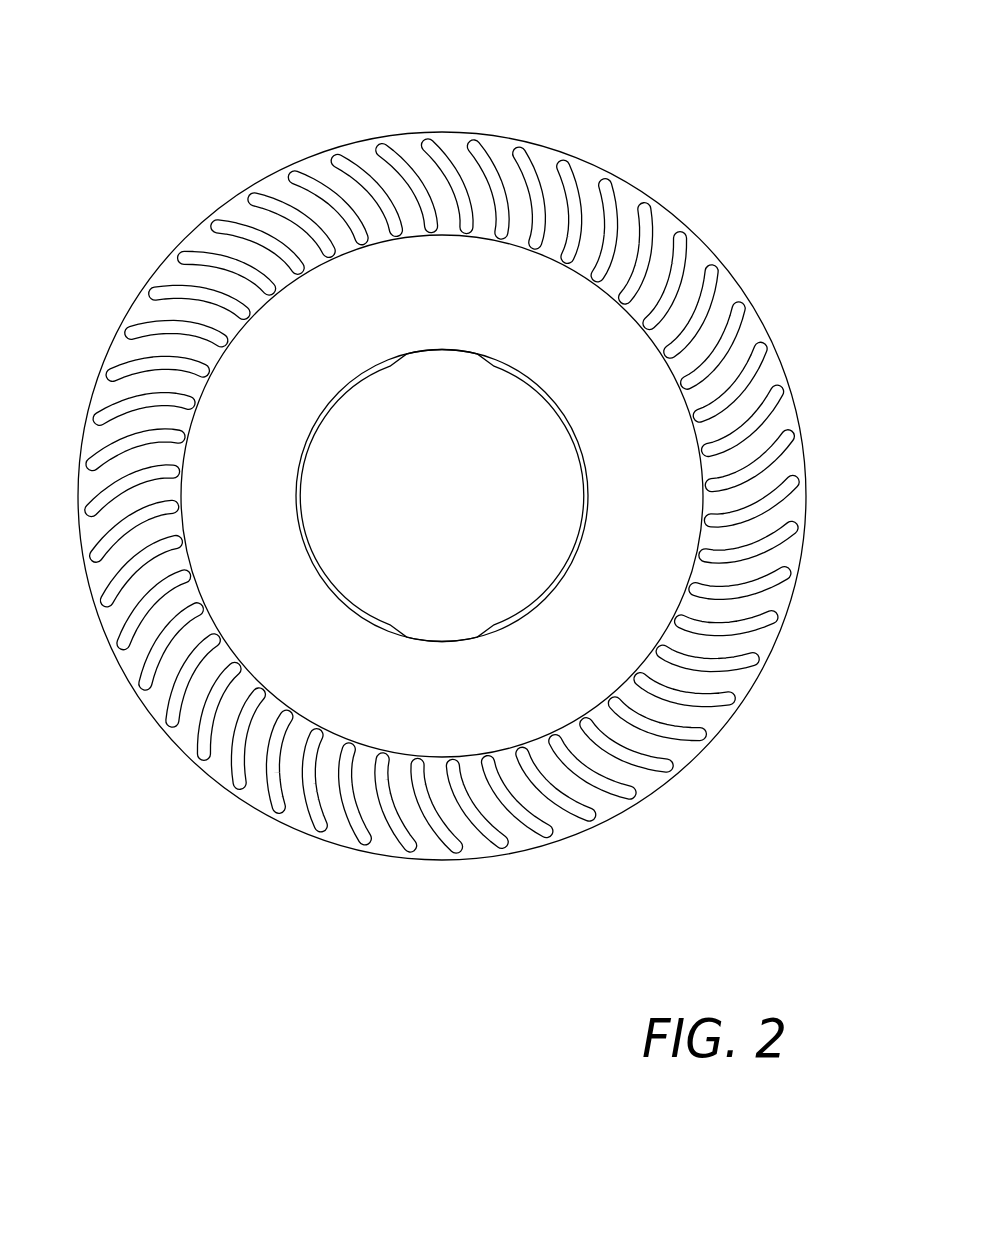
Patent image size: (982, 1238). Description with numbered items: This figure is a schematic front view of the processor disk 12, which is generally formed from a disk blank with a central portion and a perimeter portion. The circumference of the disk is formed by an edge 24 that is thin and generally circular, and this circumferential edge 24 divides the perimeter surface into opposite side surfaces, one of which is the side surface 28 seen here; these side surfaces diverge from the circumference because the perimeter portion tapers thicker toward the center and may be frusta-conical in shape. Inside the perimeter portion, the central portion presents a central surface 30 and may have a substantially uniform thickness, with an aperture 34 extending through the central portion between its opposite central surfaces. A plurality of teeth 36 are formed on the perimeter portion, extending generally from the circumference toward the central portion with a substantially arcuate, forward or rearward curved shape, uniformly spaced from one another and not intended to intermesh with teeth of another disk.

The processor disk 12 is at (455, 468).
The edge 24 is at (553, 127).
The side surface 28 is at (442, 540).
The central surface 30 is at (515, 300).
The aperture 34 is at (413, 533).
The teeth 36 is at (488, 815).